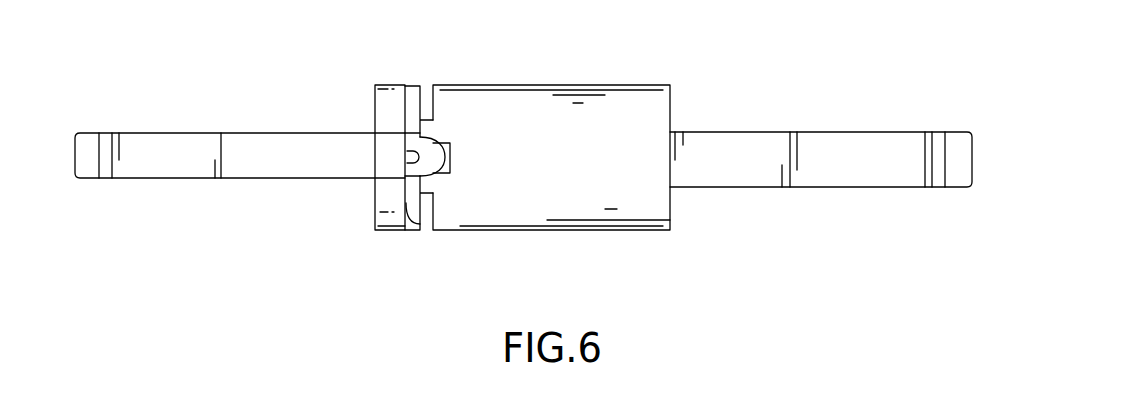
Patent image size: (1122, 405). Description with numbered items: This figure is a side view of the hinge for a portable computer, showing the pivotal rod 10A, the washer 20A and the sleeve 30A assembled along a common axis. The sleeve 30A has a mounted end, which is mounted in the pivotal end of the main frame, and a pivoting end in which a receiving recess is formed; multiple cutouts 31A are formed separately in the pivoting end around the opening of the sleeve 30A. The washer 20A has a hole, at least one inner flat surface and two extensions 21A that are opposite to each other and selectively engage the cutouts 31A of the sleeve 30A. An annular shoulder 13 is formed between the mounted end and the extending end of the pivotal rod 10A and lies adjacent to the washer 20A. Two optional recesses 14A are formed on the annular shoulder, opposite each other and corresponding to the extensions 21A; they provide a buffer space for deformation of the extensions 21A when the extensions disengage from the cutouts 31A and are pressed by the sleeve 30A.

The pivotal rod 10A is at (237, 148).
The recesses 14A is at (391, 153).
The washer 20A is at (416, 87).
The annular shoulder 13 is at (418, 215).
The extensions 21A is at (457, 148).
The cutouts 31A is at (450, 172).
The sleeve 30A is at (611, 93).